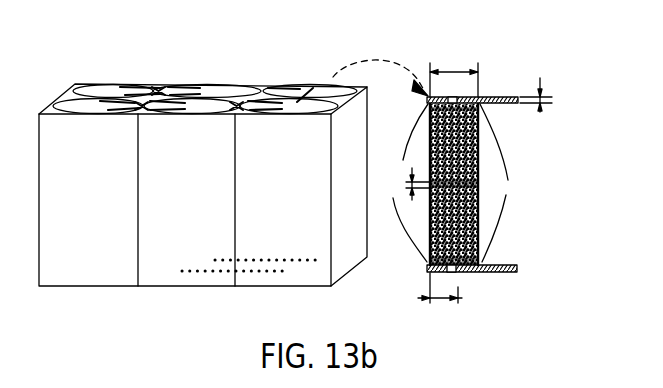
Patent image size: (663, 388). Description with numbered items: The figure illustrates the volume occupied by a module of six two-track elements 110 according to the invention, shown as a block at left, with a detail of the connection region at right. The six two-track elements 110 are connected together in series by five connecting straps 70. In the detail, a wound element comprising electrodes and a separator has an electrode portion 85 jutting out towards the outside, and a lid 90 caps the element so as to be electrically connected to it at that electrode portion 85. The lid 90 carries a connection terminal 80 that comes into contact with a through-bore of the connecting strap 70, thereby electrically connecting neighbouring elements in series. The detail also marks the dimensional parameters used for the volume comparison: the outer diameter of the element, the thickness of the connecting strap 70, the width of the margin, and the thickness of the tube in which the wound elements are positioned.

The two-track element 110 is at (232, 90).
The connection terminal 80 is at (456, 97).
The connecting strap 70 is at (507, 106).
The electrode portion 85 is at (464, 183).
The lid 90 is at (426, 184).